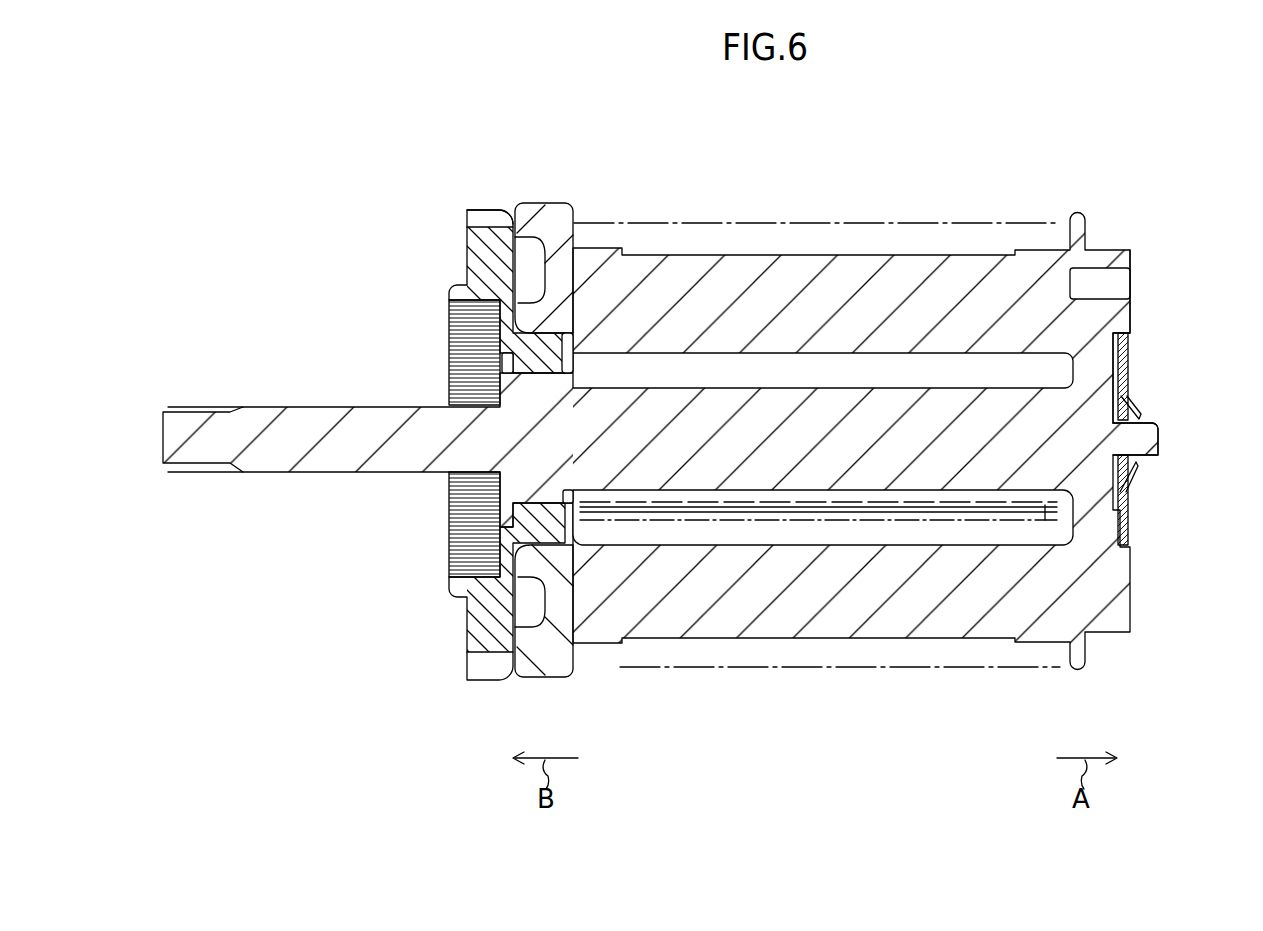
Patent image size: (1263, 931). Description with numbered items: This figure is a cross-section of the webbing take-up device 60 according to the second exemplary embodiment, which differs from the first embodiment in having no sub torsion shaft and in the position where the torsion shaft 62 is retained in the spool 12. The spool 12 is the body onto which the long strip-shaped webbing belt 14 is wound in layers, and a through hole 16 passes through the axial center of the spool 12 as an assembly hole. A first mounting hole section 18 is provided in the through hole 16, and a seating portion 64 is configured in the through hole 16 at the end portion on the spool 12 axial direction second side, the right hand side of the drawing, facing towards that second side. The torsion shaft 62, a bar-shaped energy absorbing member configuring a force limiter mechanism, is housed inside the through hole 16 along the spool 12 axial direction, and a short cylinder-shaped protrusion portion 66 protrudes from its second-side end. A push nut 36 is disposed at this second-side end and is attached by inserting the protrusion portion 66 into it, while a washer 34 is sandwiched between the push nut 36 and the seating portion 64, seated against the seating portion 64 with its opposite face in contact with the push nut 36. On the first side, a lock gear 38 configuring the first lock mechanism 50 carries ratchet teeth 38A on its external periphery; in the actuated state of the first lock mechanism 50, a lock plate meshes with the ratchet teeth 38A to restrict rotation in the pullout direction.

The spool 12 is at (748, 254).
The webbing belt 14 is at (690, 518).
The through hole 16 is at (781, 362).
The first mounting hole section 18 is at (1099, 379).
The washer 34 is at (1133, 523).
The push nut 36 is at (1137, 491).
The lock gear 38 is at (483, 181).
The ratchet teeth 38A is at (478, 205).
The first lock mechanism 50 is at (385, 180).
The webbing take-up device 60 is at (1014, 176).
The torsion shaft 62 is at (805, 493).
The seating portion 64 is at (1129, 363).
The protrusion portion 66 is at (1157, 450).